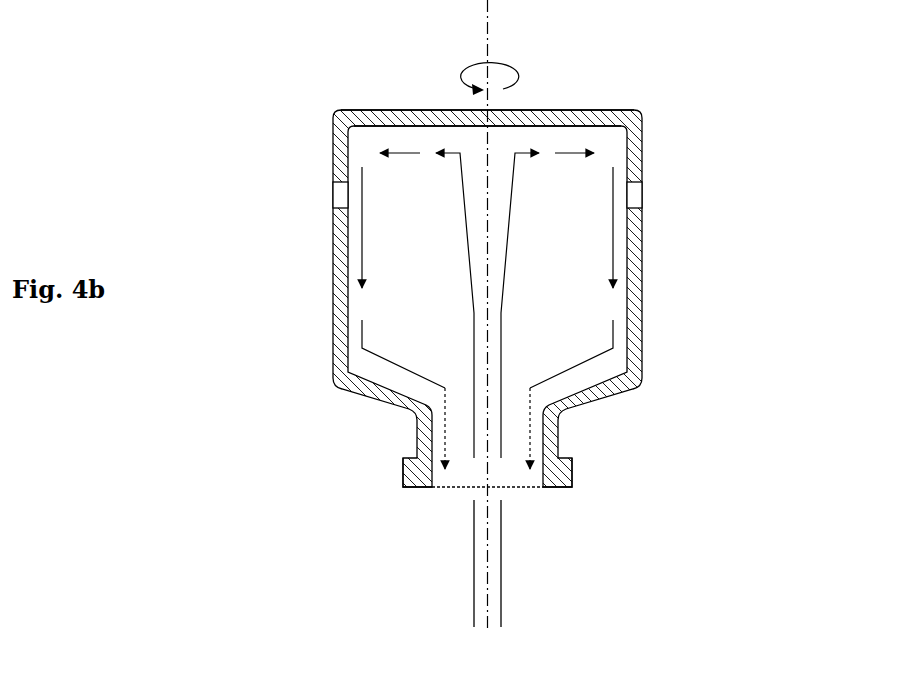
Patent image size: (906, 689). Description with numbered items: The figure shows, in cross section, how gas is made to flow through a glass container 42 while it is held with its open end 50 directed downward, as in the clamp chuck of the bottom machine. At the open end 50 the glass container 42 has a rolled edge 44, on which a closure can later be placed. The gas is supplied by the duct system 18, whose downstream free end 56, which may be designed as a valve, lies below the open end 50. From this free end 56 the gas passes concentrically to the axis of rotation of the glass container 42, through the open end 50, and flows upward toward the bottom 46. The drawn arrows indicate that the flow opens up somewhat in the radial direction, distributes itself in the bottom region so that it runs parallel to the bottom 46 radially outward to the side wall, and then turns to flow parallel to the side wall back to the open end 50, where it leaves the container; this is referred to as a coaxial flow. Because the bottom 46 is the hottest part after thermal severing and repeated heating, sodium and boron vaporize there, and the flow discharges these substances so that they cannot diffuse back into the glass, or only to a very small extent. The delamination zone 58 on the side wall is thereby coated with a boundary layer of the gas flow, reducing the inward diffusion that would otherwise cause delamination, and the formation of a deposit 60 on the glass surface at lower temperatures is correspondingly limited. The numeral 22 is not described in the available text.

The glass container 42 is at (288, 82).
The rolled edge 44 is at (378, 505).
The bottom 46 is at (542, 110).
The open end 50 is at (517, 489).
The delamination zone 58 is at (642, 195).
The deposit 60 is at (514, 316).
The duct system 18 is at (573, 575).
The feed line 22 is at (573, 575).
The free end 56 is at (503, 607).